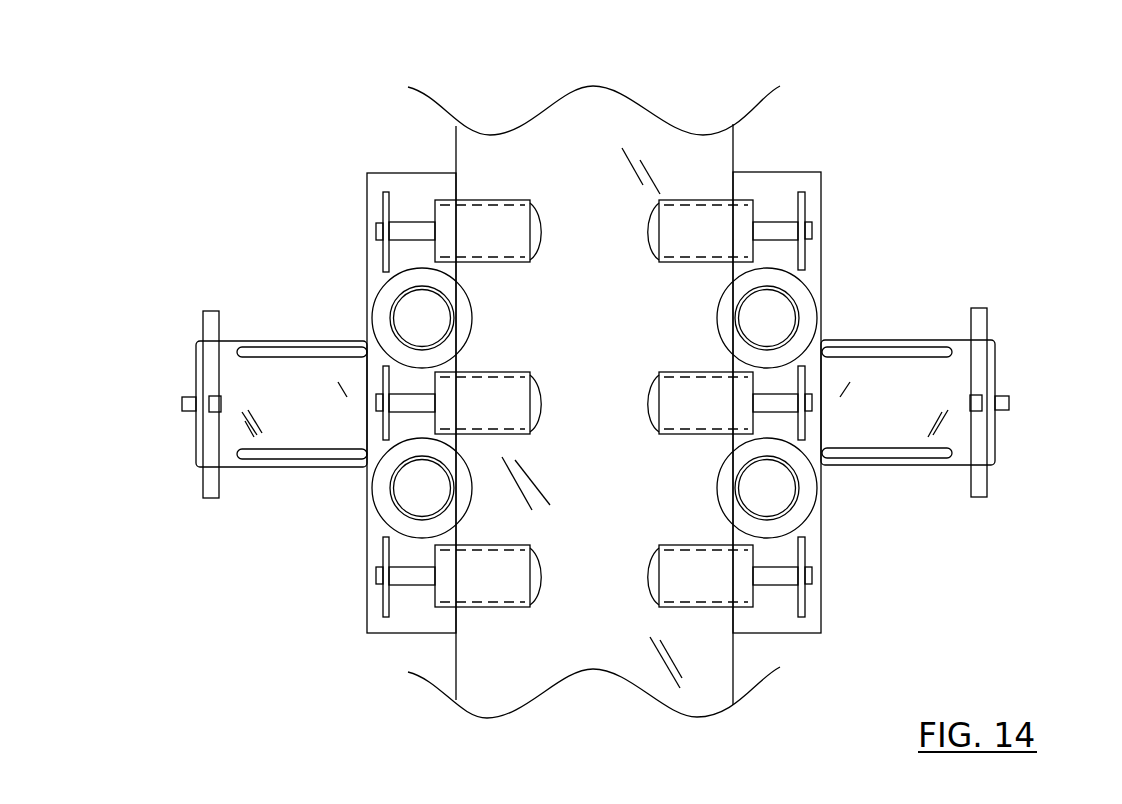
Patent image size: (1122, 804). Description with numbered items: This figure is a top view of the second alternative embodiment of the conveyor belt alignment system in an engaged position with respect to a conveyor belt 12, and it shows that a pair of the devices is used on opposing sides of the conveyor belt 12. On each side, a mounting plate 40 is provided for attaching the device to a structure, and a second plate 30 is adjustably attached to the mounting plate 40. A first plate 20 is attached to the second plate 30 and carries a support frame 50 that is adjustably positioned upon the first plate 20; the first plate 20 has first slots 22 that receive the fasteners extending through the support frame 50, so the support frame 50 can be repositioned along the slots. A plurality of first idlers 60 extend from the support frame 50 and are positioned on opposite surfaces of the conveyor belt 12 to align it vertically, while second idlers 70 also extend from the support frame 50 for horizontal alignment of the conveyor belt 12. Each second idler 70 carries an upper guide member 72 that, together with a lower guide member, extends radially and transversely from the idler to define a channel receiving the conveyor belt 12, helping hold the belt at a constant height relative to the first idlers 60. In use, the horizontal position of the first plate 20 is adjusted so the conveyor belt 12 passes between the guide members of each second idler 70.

The conveyor belt 12 is at (470, 705).
The first plate 20 is at (232, 463).
The first slot 22 is at (307, 352).
The second plate 30 is at (198, 363).
The mounting plate 40 is at (215, 311).
The support frame 50 is at (383, 195).
The first idlers 60 is at (435, 208).
The second idlers 70 is at (403, 313).
The upper guide member 72 is at (388, 290).